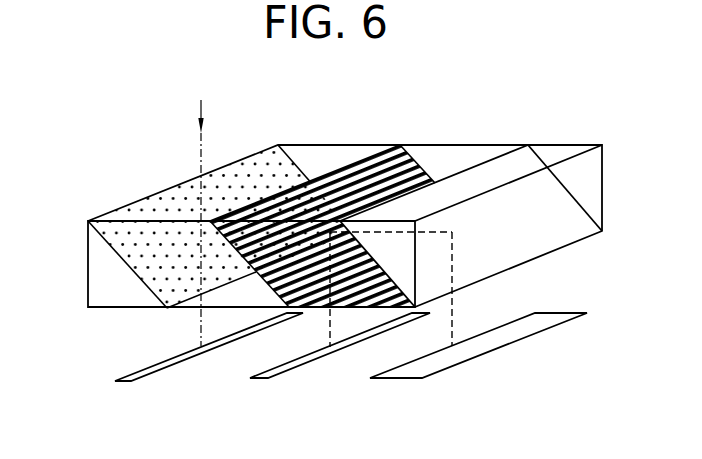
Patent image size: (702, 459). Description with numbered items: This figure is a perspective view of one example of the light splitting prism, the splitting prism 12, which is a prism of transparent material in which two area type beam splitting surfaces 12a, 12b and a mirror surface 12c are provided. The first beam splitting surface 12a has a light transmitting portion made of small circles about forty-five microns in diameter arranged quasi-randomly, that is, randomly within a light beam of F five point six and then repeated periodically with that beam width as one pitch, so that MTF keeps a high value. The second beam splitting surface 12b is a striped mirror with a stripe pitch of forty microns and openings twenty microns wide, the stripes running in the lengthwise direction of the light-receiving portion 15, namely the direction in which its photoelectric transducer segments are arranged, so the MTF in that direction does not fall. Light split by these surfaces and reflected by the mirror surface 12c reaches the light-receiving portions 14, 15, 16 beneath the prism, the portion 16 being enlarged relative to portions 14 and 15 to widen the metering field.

The splitting prism 12 is at (87, 272).
The area type beam splitting surface 12a is at (254, 155).
The area type beam splitting surface 12b is at (376, 158).
The mirror surface 12c is at (506, 168).
The light-receiving portion 14 is at (155, 367).
The light-receiving portion 15 is at (293, 370).
The light-receiving portion 16 is at (467, 363).